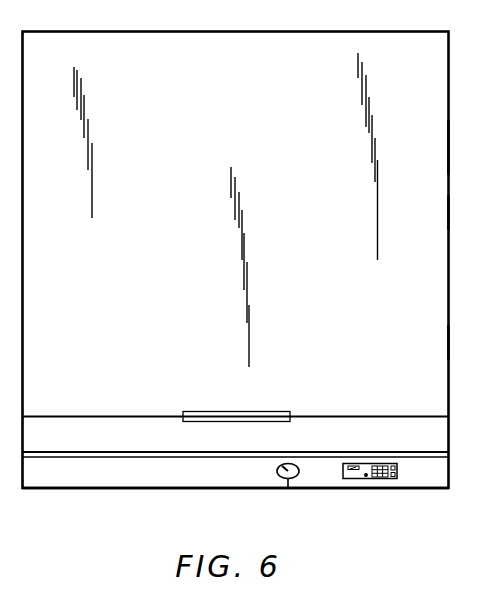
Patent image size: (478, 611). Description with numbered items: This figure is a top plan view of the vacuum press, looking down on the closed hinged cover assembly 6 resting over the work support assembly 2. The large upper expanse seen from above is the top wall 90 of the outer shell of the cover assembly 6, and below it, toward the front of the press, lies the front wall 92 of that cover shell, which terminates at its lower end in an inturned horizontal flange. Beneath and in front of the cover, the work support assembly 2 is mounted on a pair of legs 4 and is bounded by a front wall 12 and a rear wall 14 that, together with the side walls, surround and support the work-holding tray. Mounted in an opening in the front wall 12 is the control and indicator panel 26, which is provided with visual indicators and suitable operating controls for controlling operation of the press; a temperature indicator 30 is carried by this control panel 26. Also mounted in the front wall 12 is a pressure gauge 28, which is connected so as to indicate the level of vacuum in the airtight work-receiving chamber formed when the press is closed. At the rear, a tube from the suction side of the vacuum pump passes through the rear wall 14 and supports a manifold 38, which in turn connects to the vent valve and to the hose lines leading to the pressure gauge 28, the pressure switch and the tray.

The work support assembly 2 is at (449, 492).
The hinged cover assembly 6 is at (449, 148).
The legs 4 is at (464, 212).
The manifold 38 is at (464, 342).
The rear wall 14 is at (251, 425).
The front wall 92 is at (99, 430).
The front wall 12 is at (153, 477).
The pressure gauge 28 is at (288, 488).
The control and indicator panel 26 is at (386, 479).
The temperature indicator 30 is at (350, 470).
The top wall 90 is at (317, 194).